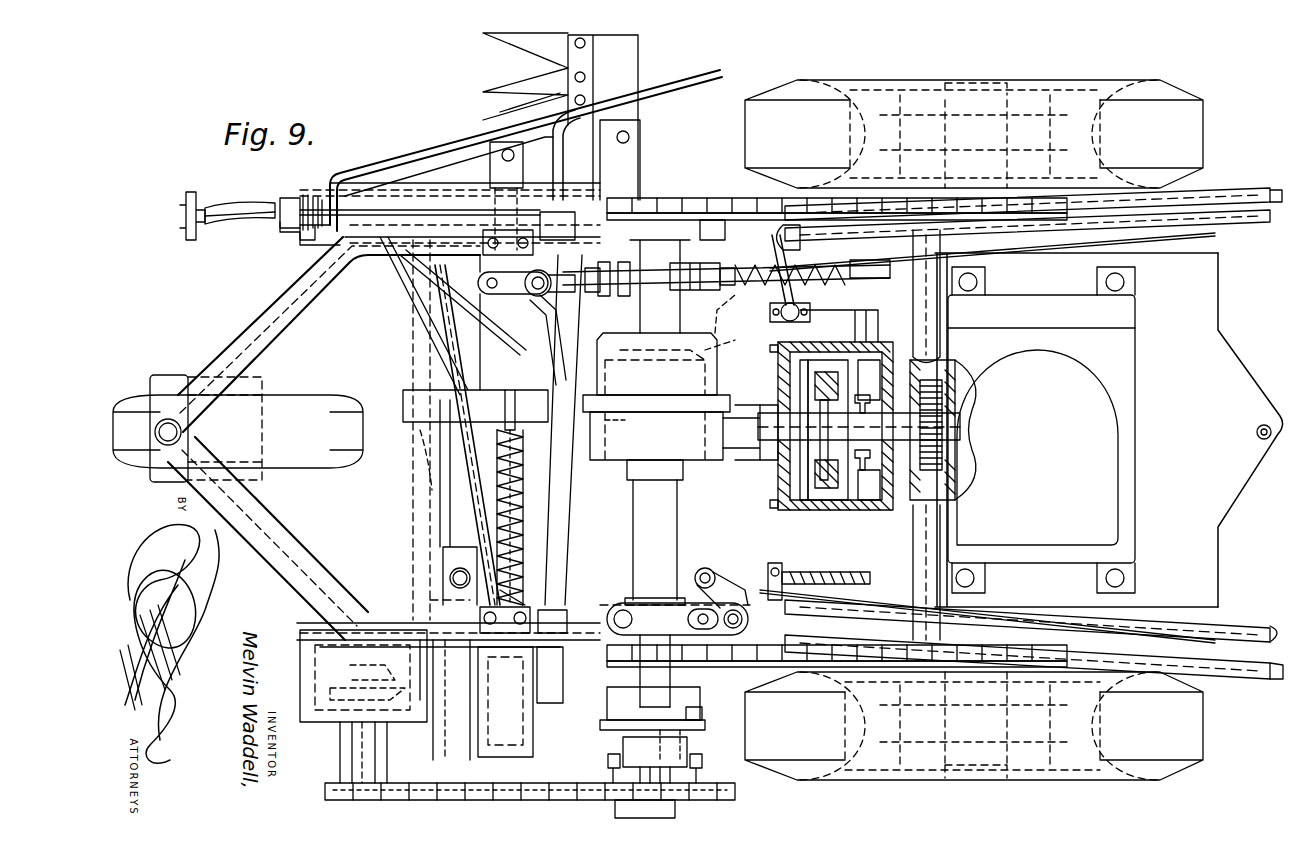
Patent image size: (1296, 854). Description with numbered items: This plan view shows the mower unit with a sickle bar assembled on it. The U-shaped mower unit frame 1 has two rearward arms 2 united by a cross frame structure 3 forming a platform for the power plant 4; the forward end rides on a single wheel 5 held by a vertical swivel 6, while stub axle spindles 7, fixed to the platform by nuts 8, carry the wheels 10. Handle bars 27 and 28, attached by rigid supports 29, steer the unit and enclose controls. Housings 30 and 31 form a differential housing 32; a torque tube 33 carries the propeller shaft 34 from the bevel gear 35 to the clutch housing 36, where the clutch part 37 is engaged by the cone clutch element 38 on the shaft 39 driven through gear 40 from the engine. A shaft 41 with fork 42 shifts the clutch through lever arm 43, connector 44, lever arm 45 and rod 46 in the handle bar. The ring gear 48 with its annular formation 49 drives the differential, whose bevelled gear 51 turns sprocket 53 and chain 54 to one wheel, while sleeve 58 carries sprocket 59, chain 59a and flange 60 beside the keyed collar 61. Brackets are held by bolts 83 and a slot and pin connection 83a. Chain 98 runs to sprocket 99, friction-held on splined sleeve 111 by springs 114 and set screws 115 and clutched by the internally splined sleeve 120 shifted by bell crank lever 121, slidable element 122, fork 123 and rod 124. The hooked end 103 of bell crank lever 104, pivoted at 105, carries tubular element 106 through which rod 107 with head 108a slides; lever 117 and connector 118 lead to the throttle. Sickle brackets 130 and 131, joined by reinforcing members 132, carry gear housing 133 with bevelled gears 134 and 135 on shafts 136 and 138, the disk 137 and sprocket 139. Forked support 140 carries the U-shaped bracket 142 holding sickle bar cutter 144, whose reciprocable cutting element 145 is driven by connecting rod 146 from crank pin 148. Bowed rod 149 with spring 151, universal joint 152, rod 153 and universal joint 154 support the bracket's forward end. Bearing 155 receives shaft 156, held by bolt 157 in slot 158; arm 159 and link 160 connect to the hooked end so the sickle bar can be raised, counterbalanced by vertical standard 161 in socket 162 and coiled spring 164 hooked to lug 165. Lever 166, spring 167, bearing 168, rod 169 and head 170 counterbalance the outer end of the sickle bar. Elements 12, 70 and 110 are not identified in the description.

The mower unit frame 1 is at (240, 338).
The arms 2 is at (1160, 246).
The cross frame structure 3 is at (1222, 355).
The power plant 4 is at (1041, 430).
The single wheel 5 is at (296, 405).
The vertical swivel 6 is at (168, 425).
The stub axle spindles 7 is at (1008, 110).
The nuts 8 is at (1022, 292).
The wheels 10 is at (1103, 80).
The bolt 12 is at (1255, 431).
The handle bar 27 is at (1236, 194).
The handle bar 28 is at (1230, 672).
The rigid supports 29 is at (1244, 234).
The housing 30 is at (648, 298).
The housing 31 is at (670, 525).
The differential housing 32 is at (613, 450).
The torque tube 33 is at (760, 450).
The propeller shaft 34 is at (770, 420).
The bevel gear 35 is at (685, 457).
The clutch housing 36 is at (823, 345).
The clutch part 37 is at (812, 508).
The cone clutch element 38 is at (828, 430).
The shaft 39 is at (859, 426).
The gear 40 is at (940, 408).
The shaft 41 is at (852, 508).
The fork 42 is at (882, 400).
The lever arm 43 is at (832, 315).
The universally swivelling connector 44 is at (782, 320).
The lever arm 45 is at (780, 300).
The rod 46 is at (790, 228).
The bevelled ring gear 48 is at (622, 417).
The integral annular formation 49 is at (712, 372).
The bevelled gear 51 is at (740, 330).
The sprocket 53 is at (665, 198).
The chain 54 is at (690, 198).
The sleeve 58 is at (640, 656).
The sprocket 59 is at (695, 660).
The chain 59a is at (730, 660).
The flange 60 is at (628, 675).
The collar 61 is at (610, 697).
The flange 70 is at (612, 718).
The removable bolts 83 is at (430, 172).
The slot and pin connection 83a is at (600, 205).
The chain 98 is at (490, 792).
The sprocket 99 is at (690, 797).
The hooked end 103 is at (590, 274).
The bell crank lever 104 is at (604, 282).
The pivot 105 is at (716, 215).
The tubular element 106 is at (730, 288).
The rod 107 is at (905, 272).
The head 108a is at (695, 288).
The lever 110 is at (828, 268).
The sleeve 111 is at (612, 760).
The springs 114 is at (730, 775).
The set screws 115 is at (704, 766).
The lever 117 is at (776, 566).
The connector 118 is at (825, 572).
The internally splined sleeve 120 is at (624, 750).
The bell crank lever 121 is at (690, 588).
The slidable element 122 is at (700, 714).
The fork 123 is at (690, 736).
The rod 124 is at (888, 600).
The sickle bar unit bracket 130 is at (390, 220).
The bracket 131 is at (450, 705).
The transverse reinforcing members 132 is at (445, 538).
The gear housing 133 is at (315, 675).
The bevelled gear 134 is at (388, 668).
The bevelled gear 135 is at (362, 688).
The shaft 136 is at (458, 740).
The disk 137 is at (533, 738).
The shaft 138 is at (345, 748).
The sprocket 139 is at (450, 580).
The forked support 140 is at (392, 300).
The sickle bar supporting bracket 142 is at (428, 170).
The sickle bar cutter 144 is at (622, 60).
The reciprocable cutting element 145 is at (545, 65).
The connecting rod 146 is at (568, 551).
The crank pin 148 is at (553, 697).
The bowed rod 149 is at (247, 202).
The spring 151 is at (318, 192).
The universal joint 152 is at (184, 215).
The rod 153 is at (230, 226).
The universal joint 154 is at (310, 236).
The bearing 155 is at (420, 452).
The shaft 156 is at (455, 485).
The bolt 157 is at (405, 428).
The slot 158 is at (420, 378).
The arm 159 is at (560, 350).
The link 160 is at (628, 296).
The vertical standard 161 is at (520, 285).
The socket 162 is at (556, 322).
The coiled spring 164 is at (540, 298).
The lug 165 is at (566, 298).
The lever 166 is at (515, 438).
The spring 167 is at (508, 508).
The bearing 168 is at (545, 400).
The rod 169 is at (440, 350).
The head 170 is at (515, 470).